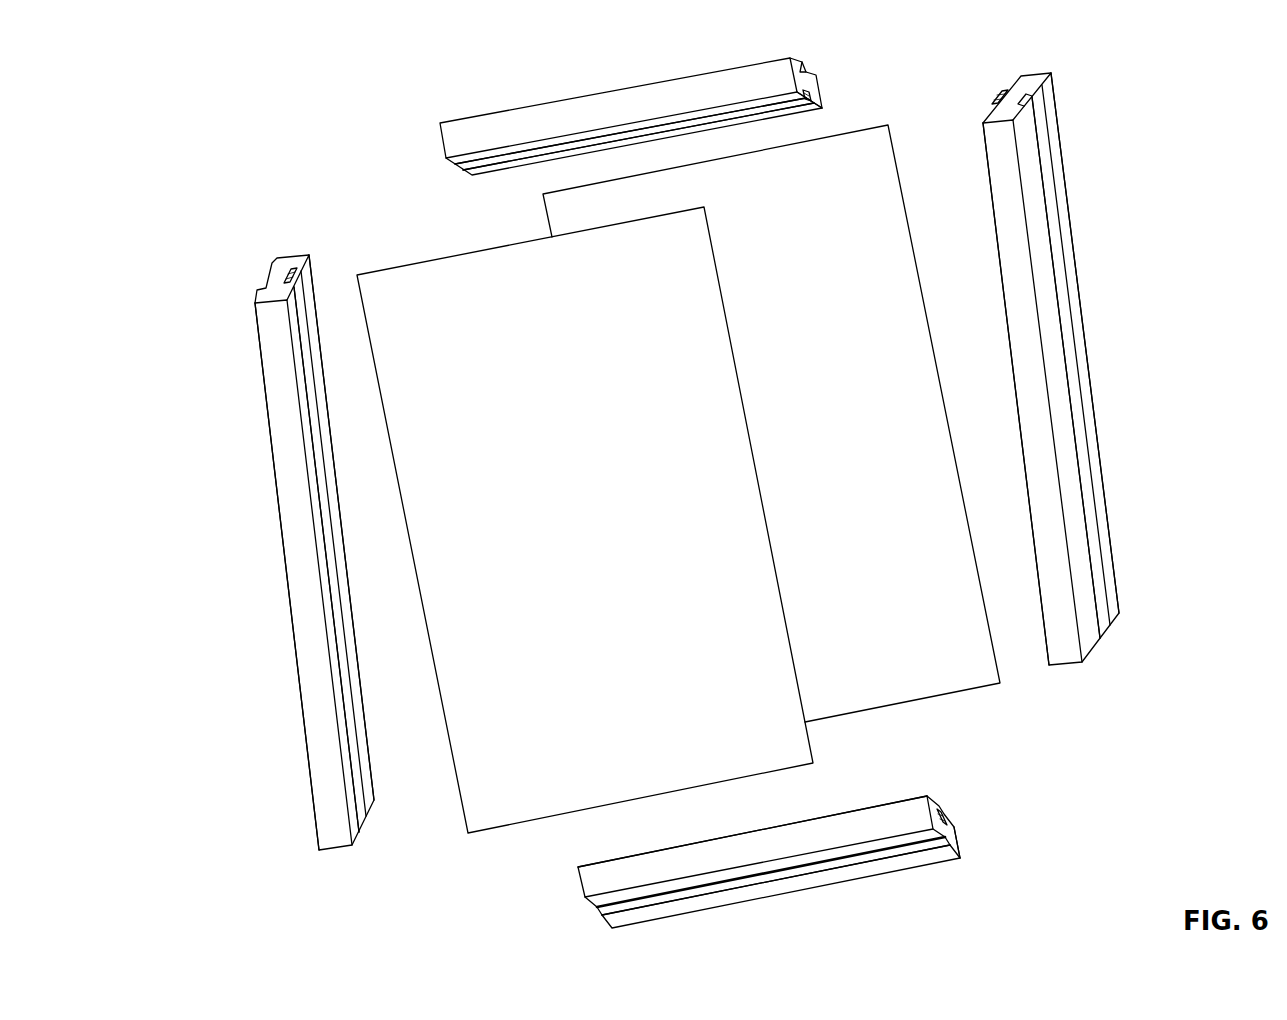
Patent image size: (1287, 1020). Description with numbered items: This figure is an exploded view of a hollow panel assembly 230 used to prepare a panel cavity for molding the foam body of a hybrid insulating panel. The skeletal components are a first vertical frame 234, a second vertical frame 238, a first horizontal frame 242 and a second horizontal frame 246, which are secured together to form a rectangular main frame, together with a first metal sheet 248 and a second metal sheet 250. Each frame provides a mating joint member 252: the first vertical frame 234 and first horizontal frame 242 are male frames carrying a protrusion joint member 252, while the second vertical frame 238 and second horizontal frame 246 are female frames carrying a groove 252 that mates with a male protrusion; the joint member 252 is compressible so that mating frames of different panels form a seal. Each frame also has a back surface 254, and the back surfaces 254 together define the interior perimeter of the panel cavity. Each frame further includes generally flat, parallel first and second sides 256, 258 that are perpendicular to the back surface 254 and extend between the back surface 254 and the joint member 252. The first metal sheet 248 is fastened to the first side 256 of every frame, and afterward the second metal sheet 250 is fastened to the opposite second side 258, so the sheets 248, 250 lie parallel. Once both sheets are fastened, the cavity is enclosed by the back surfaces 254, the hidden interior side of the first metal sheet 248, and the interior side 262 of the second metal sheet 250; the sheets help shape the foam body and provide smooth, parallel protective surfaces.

The hollow panel assembly 230 is at (263, 78).
The first vertical frame 234 is at (283, 260).
The second vertical frame 238 is at (1032, 85).
The first horizontal frame 242 is at (507, 123).
The second horizontal frame 246 is at (890, 880).
The first metal sheet 248 is at (431, 276).
The second metal sheet 250 is at (893, 180).
The joint member 252 is at (800, 58).
The back surface 254 is at (485, 165).
The first side 256 is at (690, 108).
The second side 258 is at (822, 100).
The interior side of the second metal sheet 262 is at (875, 444).